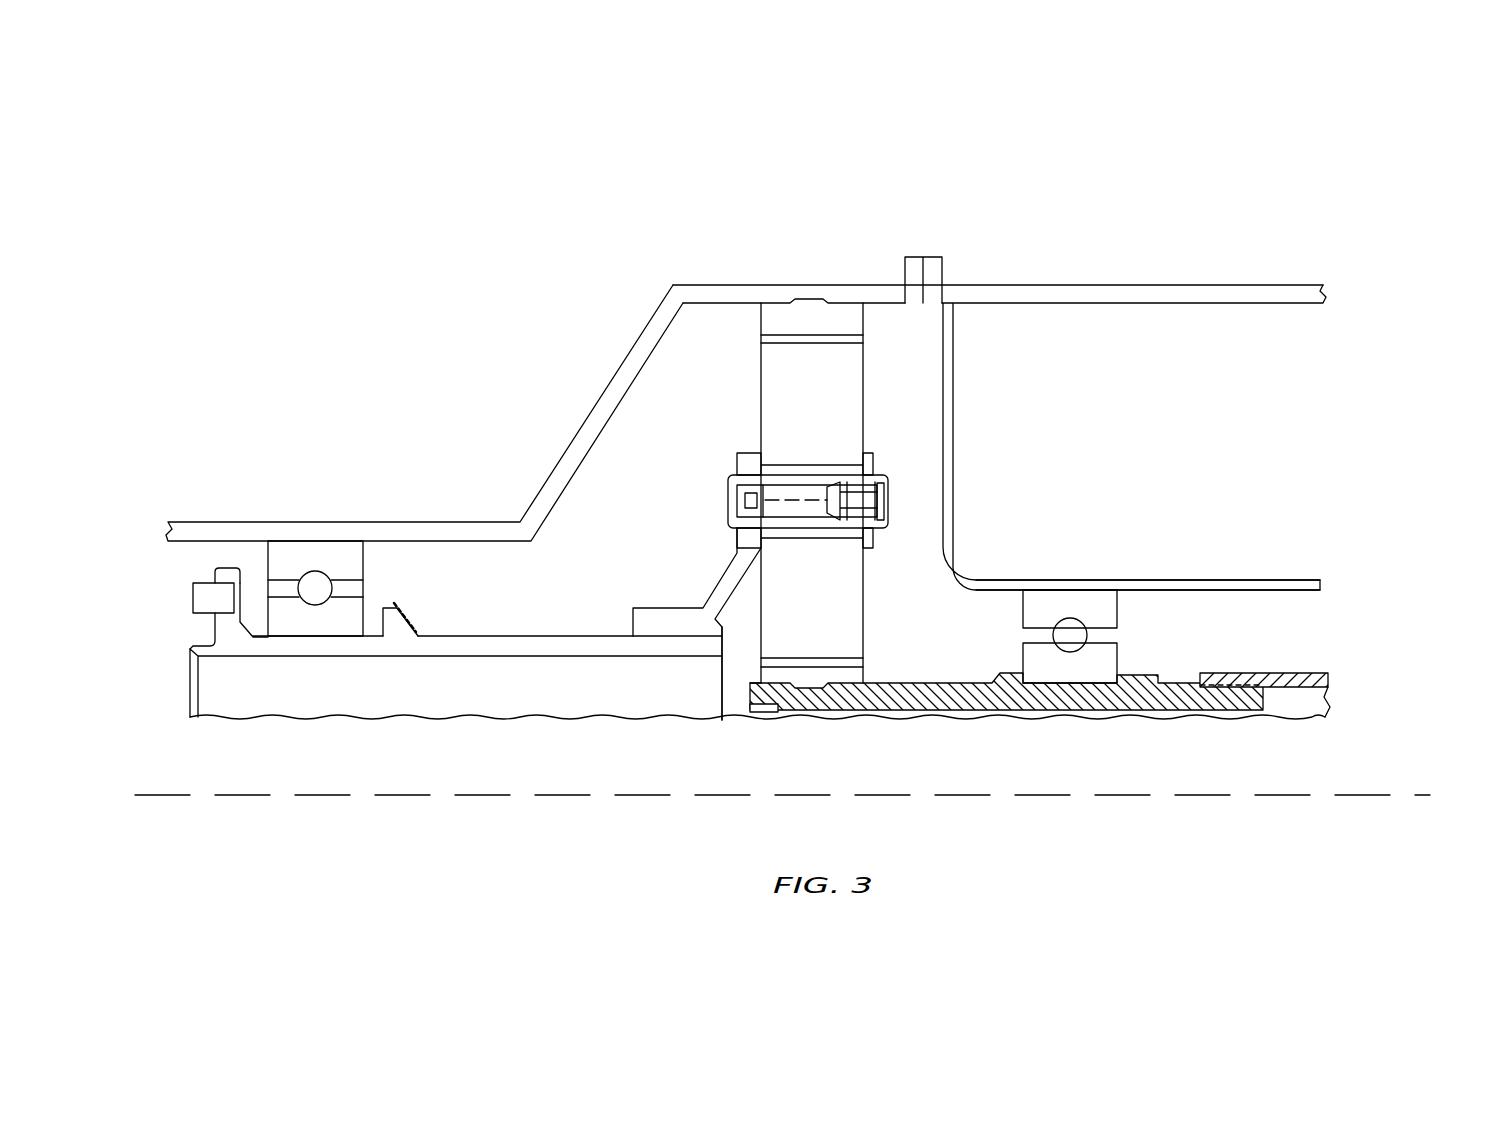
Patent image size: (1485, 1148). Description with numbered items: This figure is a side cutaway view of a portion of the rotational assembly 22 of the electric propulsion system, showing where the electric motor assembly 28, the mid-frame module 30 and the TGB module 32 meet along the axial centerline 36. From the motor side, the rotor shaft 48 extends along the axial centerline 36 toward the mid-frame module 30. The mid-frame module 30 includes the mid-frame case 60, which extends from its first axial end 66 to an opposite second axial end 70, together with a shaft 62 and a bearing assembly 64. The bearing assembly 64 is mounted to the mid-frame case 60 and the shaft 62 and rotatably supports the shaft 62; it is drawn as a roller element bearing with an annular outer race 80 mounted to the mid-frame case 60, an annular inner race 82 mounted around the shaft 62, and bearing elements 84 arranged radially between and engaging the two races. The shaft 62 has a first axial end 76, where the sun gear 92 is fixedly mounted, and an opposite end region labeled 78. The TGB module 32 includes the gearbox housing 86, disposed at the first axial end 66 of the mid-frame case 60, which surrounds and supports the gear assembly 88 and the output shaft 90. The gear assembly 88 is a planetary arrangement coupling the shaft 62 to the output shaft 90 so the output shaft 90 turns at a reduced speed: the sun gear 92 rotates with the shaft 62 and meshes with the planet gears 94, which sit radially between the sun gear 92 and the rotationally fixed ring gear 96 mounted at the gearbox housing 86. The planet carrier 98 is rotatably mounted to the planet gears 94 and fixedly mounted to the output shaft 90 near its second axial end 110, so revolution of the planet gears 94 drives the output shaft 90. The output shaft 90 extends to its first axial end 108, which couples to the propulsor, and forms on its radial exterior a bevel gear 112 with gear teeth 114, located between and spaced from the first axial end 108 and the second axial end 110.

The rotational assembly 22 is at (1262, 167).
The electric motor assembly 28 is at (1355, 632).
The mid-frame module 30 is at (1300, 265).
The TGB module 32 is at (580, 325).
The axial centerline 36 is at (1300, 795).
The shaft 48 is at (1292, 680).
The mid-frame case 60 is at (1145, 295).
The shaft 62 is at (1165, 695).
The bearing assembly 64 is at (1005, 630).
The first axial end 66 is at (920, 250).
The lower flange of panel 70 is at (1140, 603).
The first axial end 76 is at (745, 690).
The cavity 78 is at (1282, 698).
The outer race 80 is at (1050, 600).
The inner race 82 is at (1038, 660).
The bearing elements 84 is at (1072, 638).
The gearbox housing 86 is at (718, 285).
The gear assembly 88 is at (740, 385).
The output shaft 90 is at (555, 640).
The sun gear 92 is at (850, 672).
The planet gears 94 is at (850, 580).
The ring gear 96 is at (848, 312).
The planet carrier 98 is at (725, 585).
The first axial end 108 is at (180, 635).
The second axial end 110 is at (700, 672).
The bevel gear 112 is at (400, 628).
The gear teeth 114 is at (410, 605).